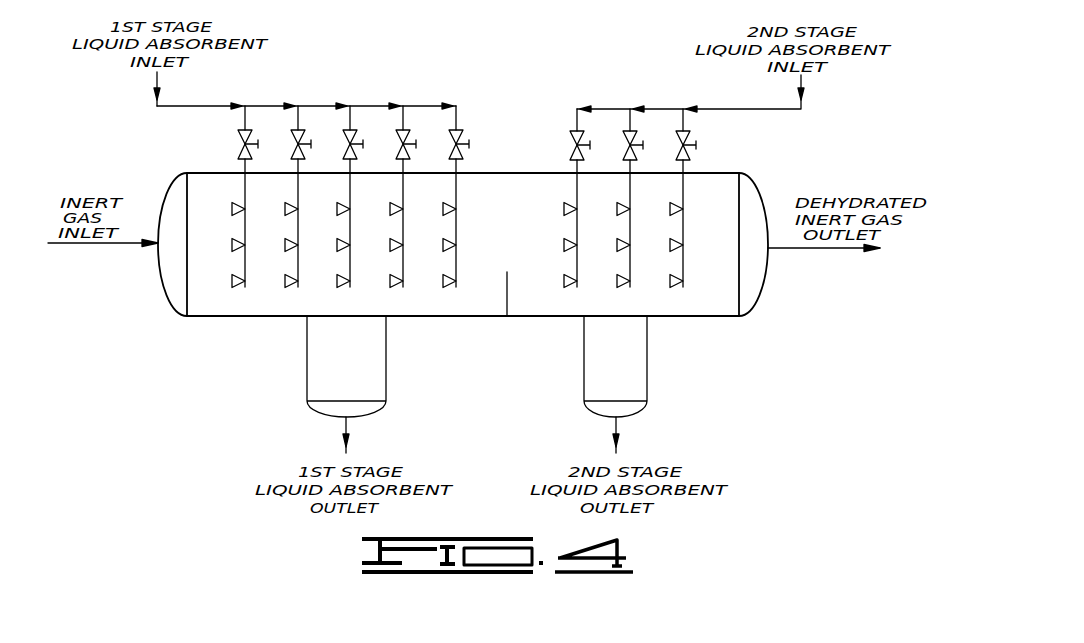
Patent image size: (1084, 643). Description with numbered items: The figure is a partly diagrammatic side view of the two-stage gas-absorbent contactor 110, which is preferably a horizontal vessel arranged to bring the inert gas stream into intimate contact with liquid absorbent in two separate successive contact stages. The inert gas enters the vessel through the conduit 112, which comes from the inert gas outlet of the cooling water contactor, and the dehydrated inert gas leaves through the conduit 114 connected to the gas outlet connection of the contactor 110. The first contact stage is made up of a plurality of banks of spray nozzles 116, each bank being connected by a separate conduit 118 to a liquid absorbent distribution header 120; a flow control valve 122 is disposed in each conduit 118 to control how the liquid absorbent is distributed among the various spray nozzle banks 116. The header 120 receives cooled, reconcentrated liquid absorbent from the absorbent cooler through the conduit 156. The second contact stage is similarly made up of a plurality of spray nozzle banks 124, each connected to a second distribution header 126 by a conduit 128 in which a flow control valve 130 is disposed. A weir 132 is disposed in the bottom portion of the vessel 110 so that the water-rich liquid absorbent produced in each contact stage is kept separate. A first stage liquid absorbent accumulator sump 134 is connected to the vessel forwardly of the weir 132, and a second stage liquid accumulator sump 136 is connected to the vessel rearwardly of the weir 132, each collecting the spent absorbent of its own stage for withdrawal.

The two-stage gas-absorbent contactor 110 is at (496, 168).
The conduit 112 is at (120, 250).
The conduit 114 is at (803, 251).
The banks of spray nozzles 116 is at (468, 265).
The conduit 118 is at (454, 112).
The liquid absorbent distribution header 120 is at (207, 104).
The flow control valve 122 is at (449, 152).
The spray nozzle banks 124 is at (690, 267).
The distribution header 126 is at (752, 106).
The conduit 128 is at (692, 124).
The flow control valve 130 is at (582, 152).
The weir 132 is at (507, 298).
The first stage liquid absorbent accumulator sump 134 is at (379, 360).
The second stage liquid accumulator sump 136 is at (641, 360).
The conduit 156 is at (150, 82).